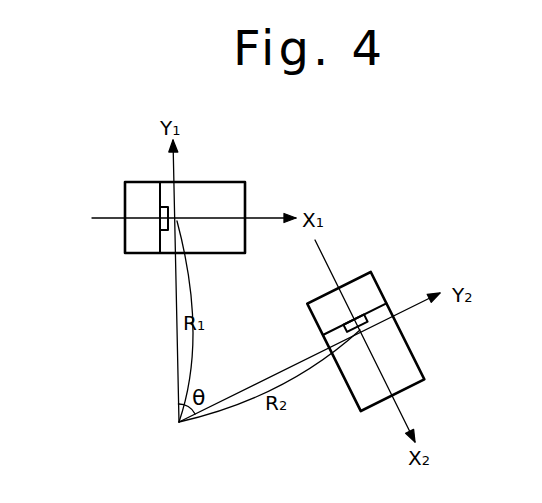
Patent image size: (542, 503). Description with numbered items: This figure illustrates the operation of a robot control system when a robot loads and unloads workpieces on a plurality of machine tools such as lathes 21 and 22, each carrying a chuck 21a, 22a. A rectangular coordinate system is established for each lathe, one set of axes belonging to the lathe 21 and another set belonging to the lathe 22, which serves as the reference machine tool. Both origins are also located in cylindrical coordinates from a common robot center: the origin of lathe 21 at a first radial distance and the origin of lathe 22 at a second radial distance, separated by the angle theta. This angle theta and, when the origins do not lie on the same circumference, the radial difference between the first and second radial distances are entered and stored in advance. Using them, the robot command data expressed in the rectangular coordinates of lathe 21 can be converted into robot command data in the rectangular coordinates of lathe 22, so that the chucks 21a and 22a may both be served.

The machine tool (lathe) 21 is at (138, 182).
The chuck 21a is at (161, 231).
The machine tool (lathe) 22 is at (415, 367).
The chuck 22a is at (368, 313).